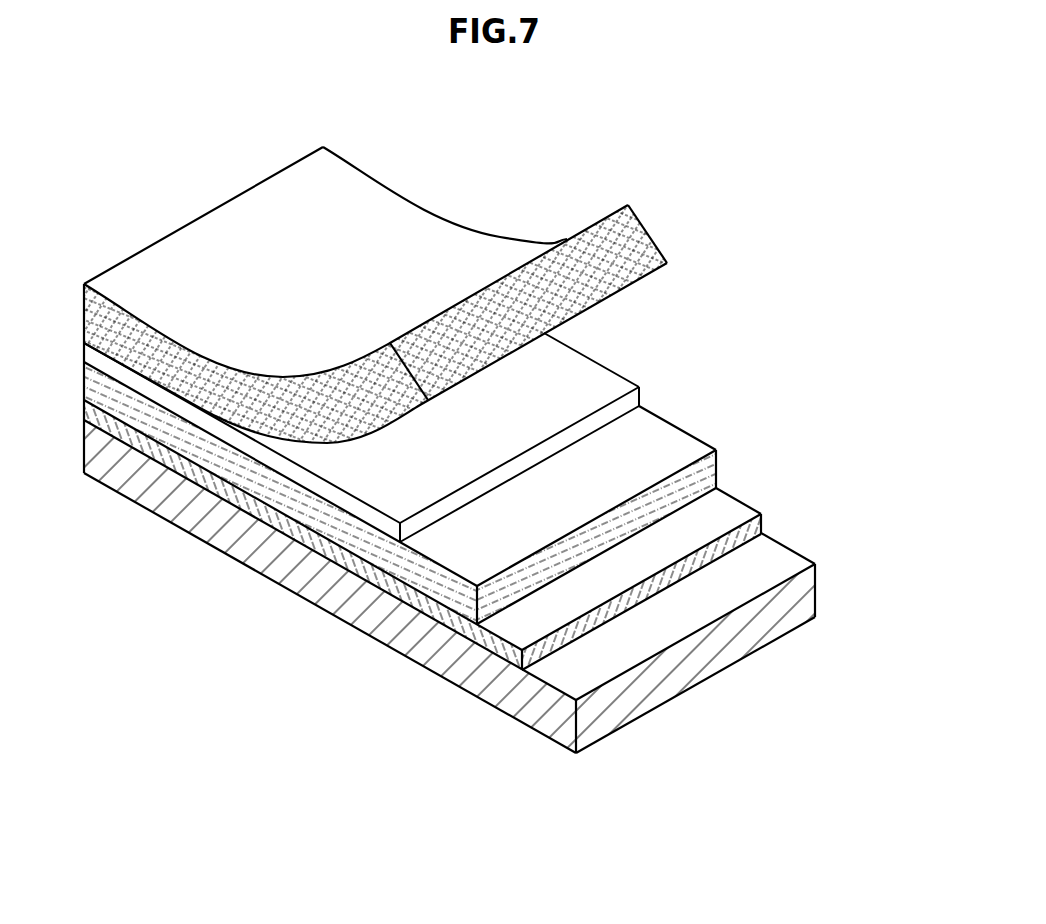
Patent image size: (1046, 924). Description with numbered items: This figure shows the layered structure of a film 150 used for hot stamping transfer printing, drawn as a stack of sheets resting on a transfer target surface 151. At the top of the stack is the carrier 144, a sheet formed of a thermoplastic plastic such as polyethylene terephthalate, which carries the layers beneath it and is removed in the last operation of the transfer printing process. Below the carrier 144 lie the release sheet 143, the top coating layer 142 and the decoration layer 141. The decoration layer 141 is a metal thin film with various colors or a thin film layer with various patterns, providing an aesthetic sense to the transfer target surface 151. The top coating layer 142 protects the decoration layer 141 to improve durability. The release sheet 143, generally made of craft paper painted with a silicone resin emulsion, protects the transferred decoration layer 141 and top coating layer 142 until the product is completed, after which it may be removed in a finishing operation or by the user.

The decoration layer 141 is at (740, 512).
The top coating layer 142 is at (718, 463).
The release sheet 143 is at (640, 393).
The carrier 144 is at (458, 295).
The film 150 is at (500, 408).
The transfer target surface 151 is at (815, 591).